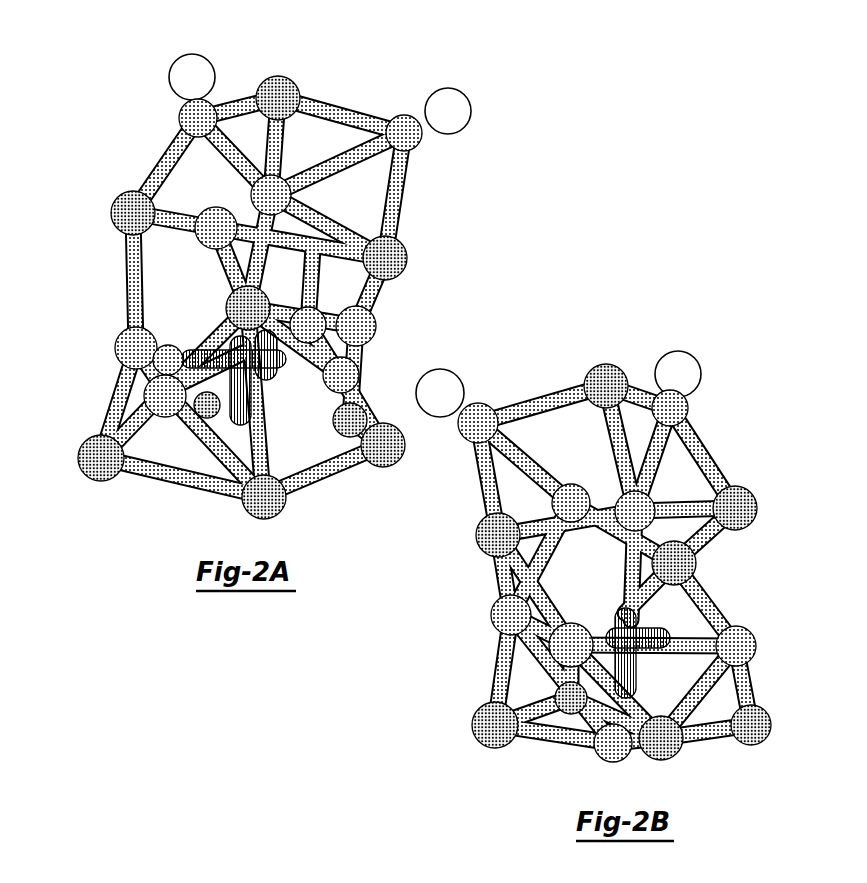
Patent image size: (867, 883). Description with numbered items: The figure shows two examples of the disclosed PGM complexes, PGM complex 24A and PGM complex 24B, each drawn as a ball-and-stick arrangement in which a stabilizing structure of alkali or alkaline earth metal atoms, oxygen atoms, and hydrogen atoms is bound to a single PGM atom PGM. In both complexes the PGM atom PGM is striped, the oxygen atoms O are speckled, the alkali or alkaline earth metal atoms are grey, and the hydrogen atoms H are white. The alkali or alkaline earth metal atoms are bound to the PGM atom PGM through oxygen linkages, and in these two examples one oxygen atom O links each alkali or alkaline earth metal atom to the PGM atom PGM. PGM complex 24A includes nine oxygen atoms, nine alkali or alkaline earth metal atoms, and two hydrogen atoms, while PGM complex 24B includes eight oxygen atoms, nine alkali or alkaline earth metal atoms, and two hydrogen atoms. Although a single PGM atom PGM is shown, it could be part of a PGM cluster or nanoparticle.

In FIG. 2A, the PGM complex A 24A is at (289, 276).
In FIG. 2B, the PGM complex B 24B is at (604, 526).
In FIG. 2A, the hydrogen atom H is at (455, 96).
In FIG. 2B, the hydrogen atom H is at (682, 366).
In FIG. 2A, the oxygen atom O is at (414, 148).
In FIG. 2B, the oxygen atom O is at (743, 632).
In FIG. 2A, the PGM atom PGM is at (240, 380).
In FIG. 2B, the PGM atom PGM is at (630, 655).